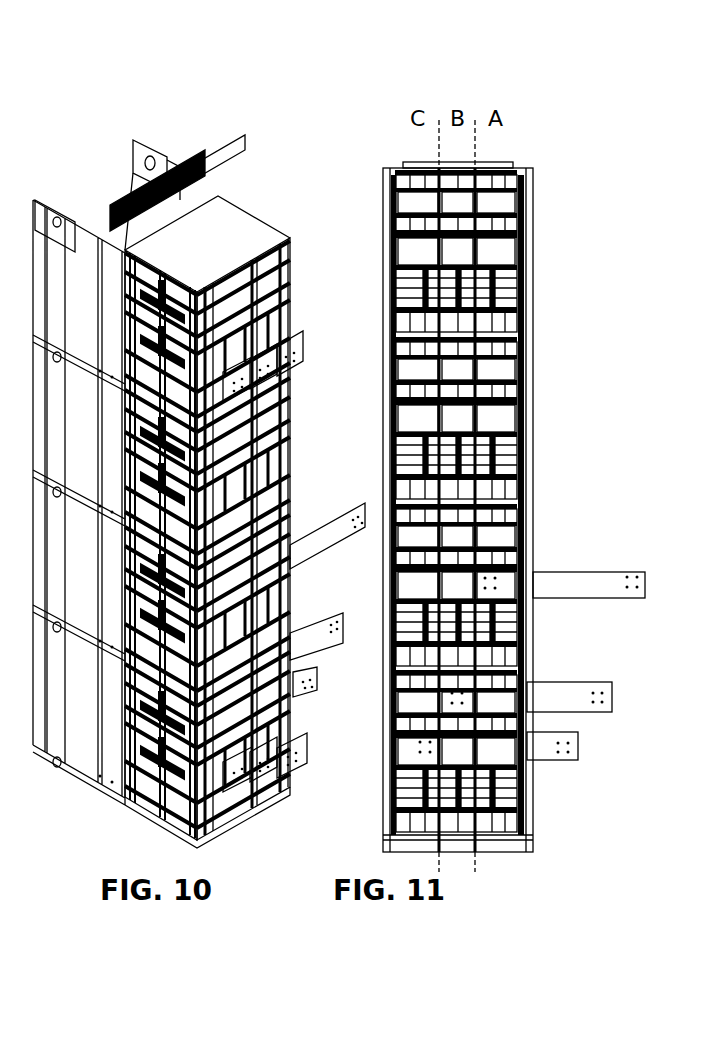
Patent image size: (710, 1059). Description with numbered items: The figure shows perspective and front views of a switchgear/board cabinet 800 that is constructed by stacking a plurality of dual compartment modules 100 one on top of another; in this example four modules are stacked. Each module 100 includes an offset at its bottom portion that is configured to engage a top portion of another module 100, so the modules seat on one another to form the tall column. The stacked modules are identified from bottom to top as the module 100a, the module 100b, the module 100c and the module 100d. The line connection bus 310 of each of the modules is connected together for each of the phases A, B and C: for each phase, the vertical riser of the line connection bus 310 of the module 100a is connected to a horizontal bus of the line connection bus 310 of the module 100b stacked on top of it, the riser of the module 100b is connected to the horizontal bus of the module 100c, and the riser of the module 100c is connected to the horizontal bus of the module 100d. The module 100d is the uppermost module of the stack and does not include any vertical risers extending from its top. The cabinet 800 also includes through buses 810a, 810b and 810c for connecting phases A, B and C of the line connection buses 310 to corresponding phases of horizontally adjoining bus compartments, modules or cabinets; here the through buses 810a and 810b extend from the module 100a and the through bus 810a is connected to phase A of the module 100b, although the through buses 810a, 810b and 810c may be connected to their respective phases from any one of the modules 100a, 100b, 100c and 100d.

In FIG. 10, the switchgear/board cabinet 800 is at (172, 124).
In FIG. 11, the switchgear/board cabinet 800 is at (517, 130).
In FIG. 10, the dual compartment module 100 is at (204, 171).
In FIG. 11, the dual compartment module 100 is at (397, 162).
In FIG. 11, the module 100a is at (534, 807).
In FIG. 11, the module 100b is at (534, 624).
In FIG. 11, the module 100c is at (534, 427).
In FIG. 11, the module 100d is at (534, 198).
In FIG. 11, the line connection bus 310 is at (505, 252).
In FIG. 10, the through bus 810a is at (352, 519).
In FIG. 11, the through bus 810a is at (645, 570).
In FIG. 10, the through bus 810b is at (333, 630).
In FIG. 11, the through bus 810b is at (612, 700).
In FIG. 10, the through bus 810c is at (320, 692).
In FIG. 11, the through bus 810c is at (578, 748).